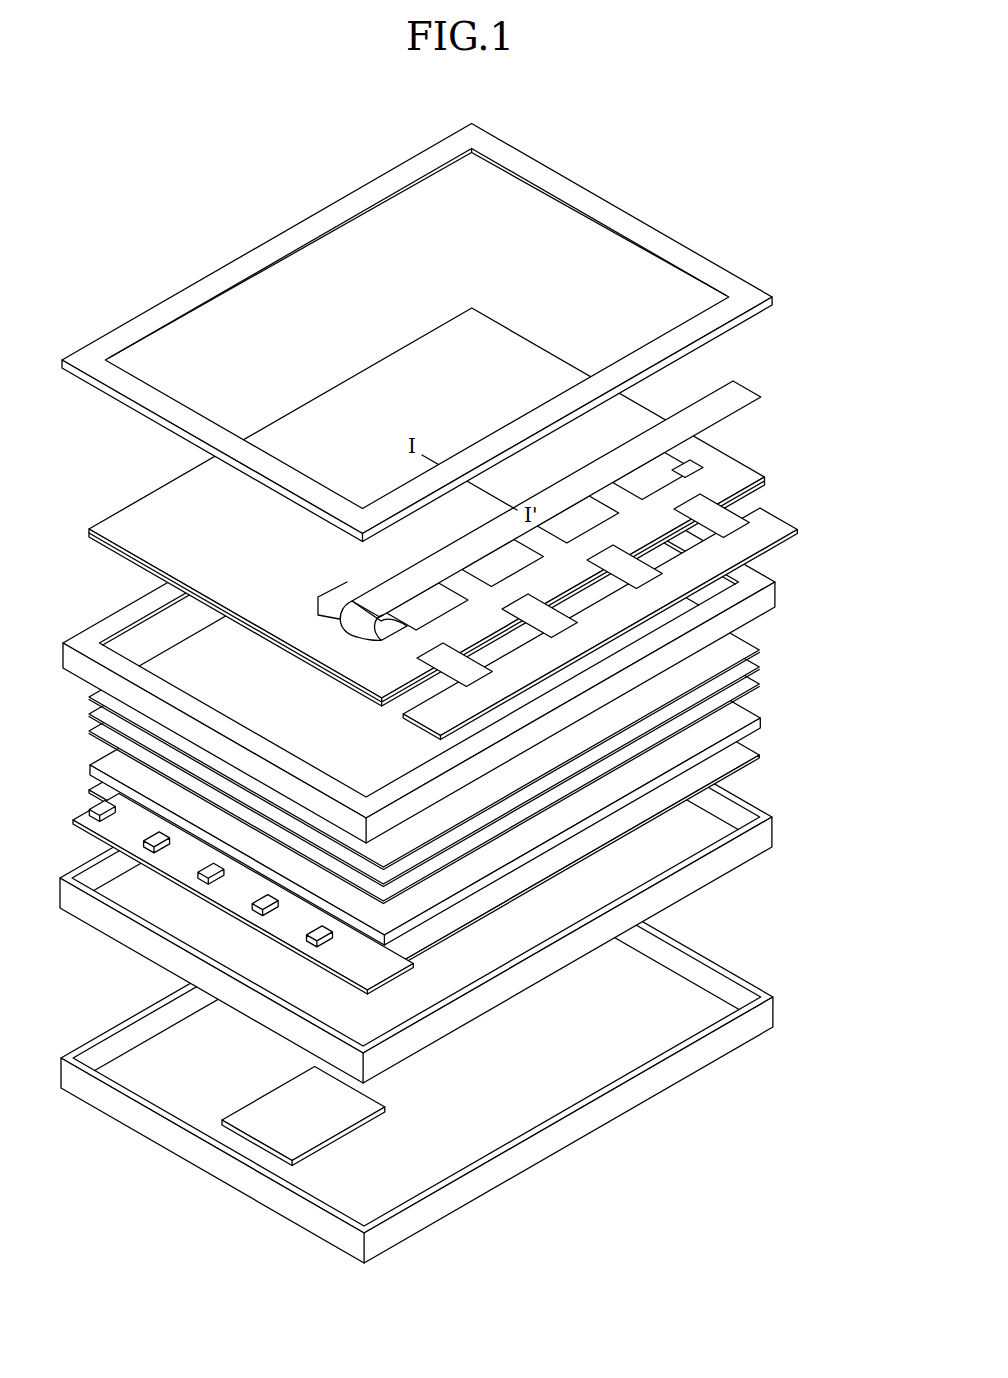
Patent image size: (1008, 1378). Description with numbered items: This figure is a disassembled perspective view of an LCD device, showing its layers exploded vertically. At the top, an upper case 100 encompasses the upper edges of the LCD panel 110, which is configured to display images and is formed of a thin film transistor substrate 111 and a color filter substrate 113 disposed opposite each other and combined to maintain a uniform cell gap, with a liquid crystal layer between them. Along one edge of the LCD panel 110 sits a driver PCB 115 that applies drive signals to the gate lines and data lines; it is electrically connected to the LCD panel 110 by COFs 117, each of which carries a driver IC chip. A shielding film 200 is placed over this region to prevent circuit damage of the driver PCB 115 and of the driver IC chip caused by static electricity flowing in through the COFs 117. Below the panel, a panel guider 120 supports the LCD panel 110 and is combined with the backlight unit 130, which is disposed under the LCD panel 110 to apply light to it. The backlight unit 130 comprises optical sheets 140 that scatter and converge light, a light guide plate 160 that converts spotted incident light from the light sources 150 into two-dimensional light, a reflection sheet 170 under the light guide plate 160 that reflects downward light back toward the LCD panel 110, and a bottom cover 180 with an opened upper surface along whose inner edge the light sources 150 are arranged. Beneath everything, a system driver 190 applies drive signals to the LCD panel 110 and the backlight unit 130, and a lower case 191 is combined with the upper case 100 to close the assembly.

The upper case 100 is at (772, 302).
The shielding film 200 is at (757, 395).
The LCD panel 110 is at (487, 524).
The color filter substrate 113 is at (700, 457).
The thin film transistor substrate 111 is at (740, 477).
The COFs (chips on films) 117 is at (723, 513).
The driver PCB 115 is at (784, 521).
The panel guider 120 is at (757, 603).
The backlight unit 130 is at (470, 781).
The optical sheets 140 is at (447, 692).
The light guide plate 160 is at (760, 719).
The reflection sheet 170 is at (750, 757).
The light sources 150 is at (90, 800).
The bottom cover 180 is at (772, 835).
The lower case 191 is at (770, 1016).
The system driver 190 is at (275, 1128).